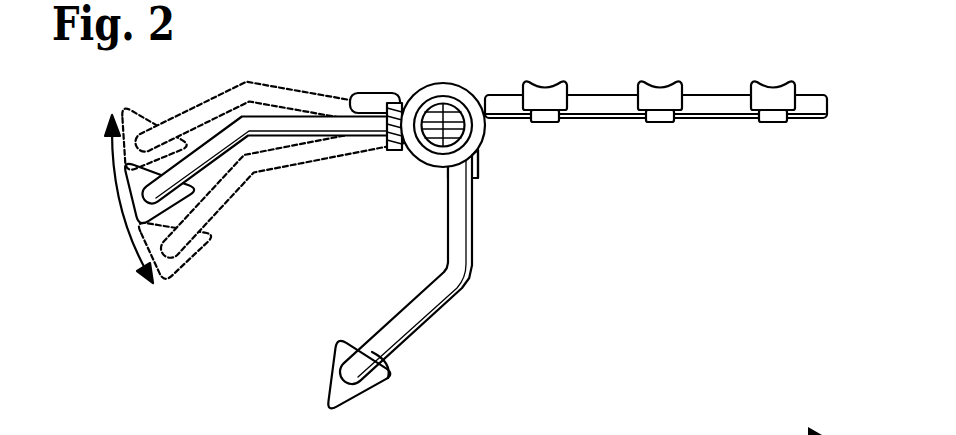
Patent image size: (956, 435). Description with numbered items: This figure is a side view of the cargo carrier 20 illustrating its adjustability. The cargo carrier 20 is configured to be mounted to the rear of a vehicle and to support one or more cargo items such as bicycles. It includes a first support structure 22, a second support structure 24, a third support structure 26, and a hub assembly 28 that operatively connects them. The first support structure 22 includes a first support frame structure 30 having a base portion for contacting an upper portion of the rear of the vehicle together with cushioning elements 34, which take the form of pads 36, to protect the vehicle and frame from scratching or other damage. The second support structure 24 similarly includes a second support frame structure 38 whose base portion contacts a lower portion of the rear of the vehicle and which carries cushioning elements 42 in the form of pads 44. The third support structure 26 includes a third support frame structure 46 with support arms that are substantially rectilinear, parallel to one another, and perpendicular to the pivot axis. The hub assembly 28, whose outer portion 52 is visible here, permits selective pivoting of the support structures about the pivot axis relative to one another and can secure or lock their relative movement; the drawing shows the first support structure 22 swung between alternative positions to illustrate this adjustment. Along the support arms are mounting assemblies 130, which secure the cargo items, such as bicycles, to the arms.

The cargo carrier 20 is at (546, 64).
The first support structure 22 is at (313, 123).
The second support structure 24 is at (438, 312).
The third support structure 26 is at (603, 112).
The hub assembly 28 is at (440, 148).
The first support frame structure 30 is at (247, 127).
The cushioning elements 34 is at (175, 205).
The pads 36 is at (274, 202).
The second support frame structure 38 is at (473, 240).
The cushioning elements 42 is at (333, 368).
The pads 44 is at (380, 365).
The third support frame structure 46 is at (695, 118).
The outer portion 52 is at (440, 95).
The mounting assemblies 130 is at (662, 88).